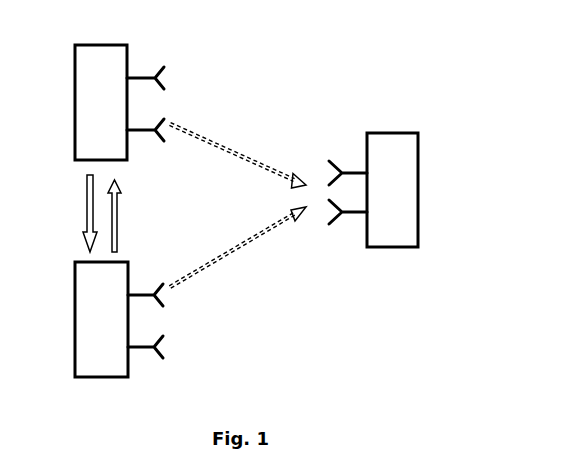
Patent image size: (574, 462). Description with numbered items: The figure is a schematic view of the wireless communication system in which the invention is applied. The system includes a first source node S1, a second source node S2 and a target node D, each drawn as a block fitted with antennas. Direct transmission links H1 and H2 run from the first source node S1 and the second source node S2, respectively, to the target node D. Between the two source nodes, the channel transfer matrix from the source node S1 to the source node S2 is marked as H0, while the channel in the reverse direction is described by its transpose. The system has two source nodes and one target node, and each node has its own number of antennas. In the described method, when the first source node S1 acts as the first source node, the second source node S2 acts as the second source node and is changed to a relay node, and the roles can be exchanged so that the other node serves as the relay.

The first source node S1 is at (119, 102).
The second source node S2 is at (119, 319).
The target node D is at (373, 190).
The channel transfer matrix from the first source node to the second source node H0 is at (88, 213).
The direct transmission link from the first source node to the target node H1 is at (237, 150).
The direct transmission link from the second source node to the target node H2 is at (237, 247).